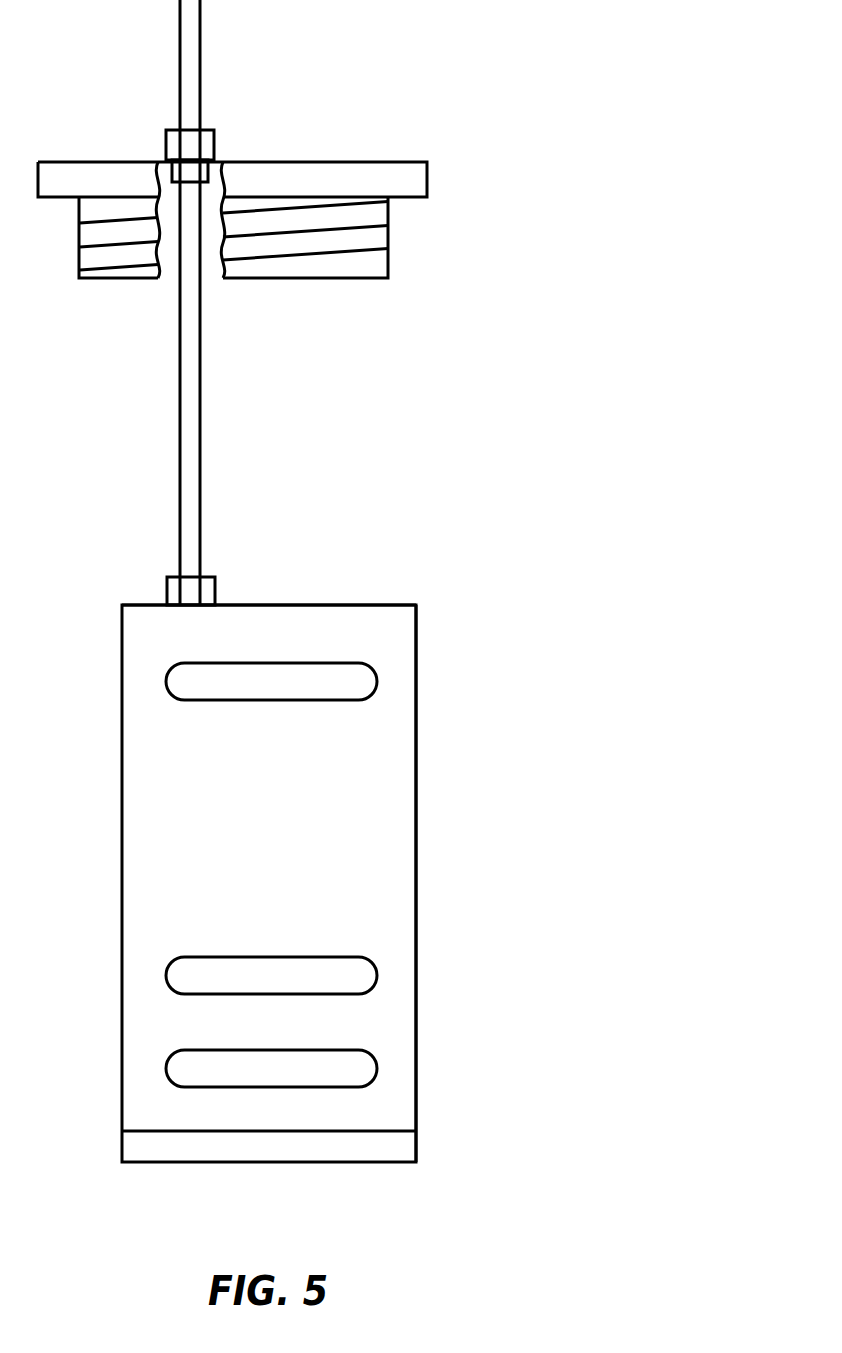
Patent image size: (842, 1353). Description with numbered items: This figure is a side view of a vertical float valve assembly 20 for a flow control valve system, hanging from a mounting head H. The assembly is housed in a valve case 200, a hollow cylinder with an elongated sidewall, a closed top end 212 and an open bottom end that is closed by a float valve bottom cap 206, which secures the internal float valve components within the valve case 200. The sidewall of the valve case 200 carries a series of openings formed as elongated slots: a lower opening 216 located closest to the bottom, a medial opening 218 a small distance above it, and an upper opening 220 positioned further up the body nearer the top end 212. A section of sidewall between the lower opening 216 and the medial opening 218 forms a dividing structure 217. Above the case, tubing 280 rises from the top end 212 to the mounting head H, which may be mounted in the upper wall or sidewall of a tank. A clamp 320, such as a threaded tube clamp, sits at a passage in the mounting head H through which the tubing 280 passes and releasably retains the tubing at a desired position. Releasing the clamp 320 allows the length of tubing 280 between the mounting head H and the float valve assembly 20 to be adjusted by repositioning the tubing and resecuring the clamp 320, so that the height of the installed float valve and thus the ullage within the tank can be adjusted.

The vertical float valve assembly 20 is at (463, 868).
The valve case 200 is at (395, 1065).
The float valve bottom cap 206 is at (395, 1145).
The closed top end 212 is at (373, 605).
The lower opening 216 is at (167, 1073).
The dividing structure 217 is at (347, 1015).
The medial opening 218 is at (167, 984).
The upper opening 220 is at (378, 677).
The tubing 280 is at (200, 452).
The clamp 320 is at (214, 139).
The mounting head H is at (427, 177).